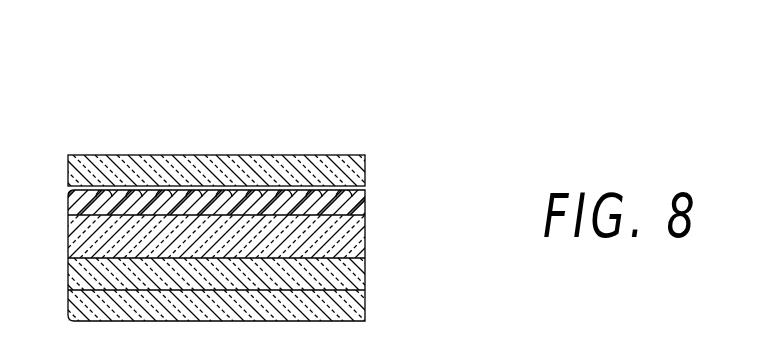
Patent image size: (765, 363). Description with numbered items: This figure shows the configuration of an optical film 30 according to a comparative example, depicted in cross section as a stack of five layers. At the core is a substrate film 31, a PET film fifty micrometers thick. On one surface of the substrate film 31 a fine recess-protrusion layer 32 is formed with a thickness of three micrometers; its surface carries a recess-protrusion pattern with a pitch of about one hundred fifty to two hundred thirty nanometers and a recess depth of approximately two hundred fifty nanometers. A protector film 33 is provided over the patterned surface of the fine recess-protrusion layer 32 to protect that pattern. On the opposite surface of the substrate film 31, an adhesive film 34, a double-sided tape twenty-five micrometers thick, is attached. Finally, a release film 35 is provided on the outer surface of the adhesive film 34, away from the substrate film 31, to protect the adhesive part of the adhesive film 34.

The optical film 30 is at (374, 123).
The substrate film 31 is at (365, 240).
The fine recess-protrusion layer 32 is at (365, 197).
The protector film 33 is at (365, 165).
The adhesive film 34 is at (365, 273).
The release film 35 is at (365, 310).